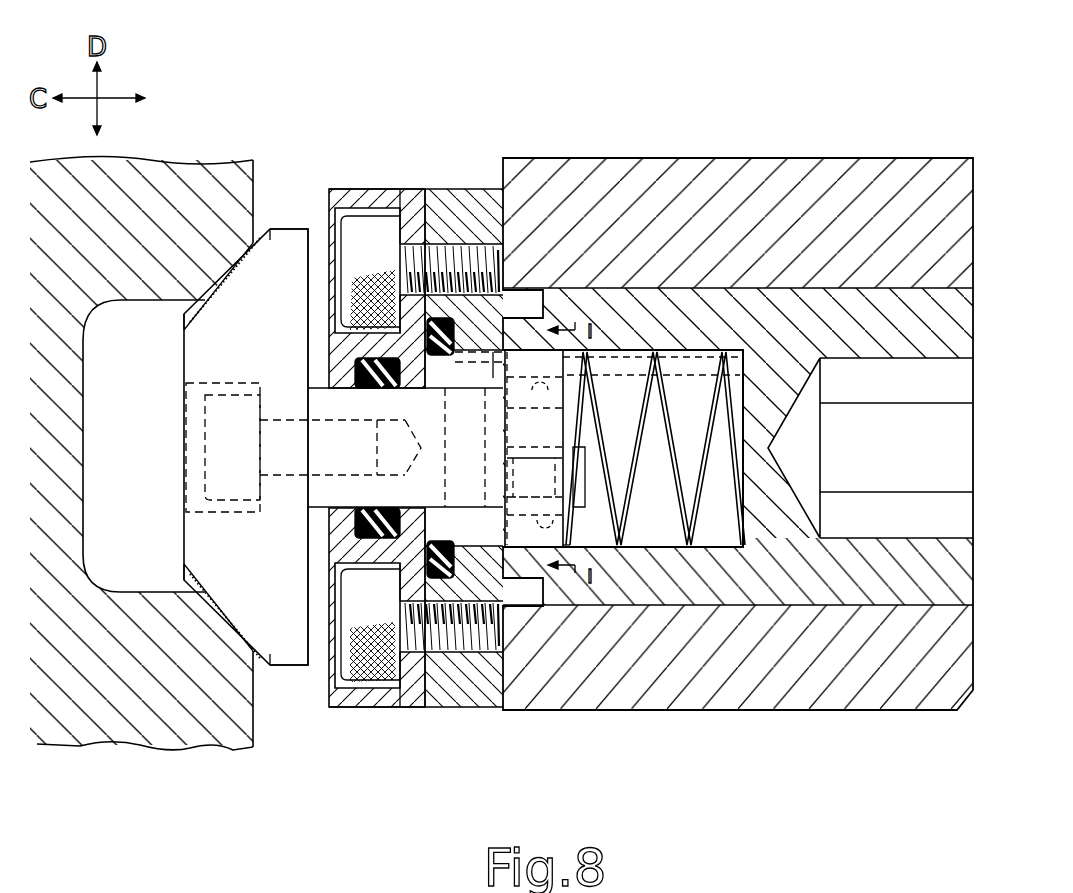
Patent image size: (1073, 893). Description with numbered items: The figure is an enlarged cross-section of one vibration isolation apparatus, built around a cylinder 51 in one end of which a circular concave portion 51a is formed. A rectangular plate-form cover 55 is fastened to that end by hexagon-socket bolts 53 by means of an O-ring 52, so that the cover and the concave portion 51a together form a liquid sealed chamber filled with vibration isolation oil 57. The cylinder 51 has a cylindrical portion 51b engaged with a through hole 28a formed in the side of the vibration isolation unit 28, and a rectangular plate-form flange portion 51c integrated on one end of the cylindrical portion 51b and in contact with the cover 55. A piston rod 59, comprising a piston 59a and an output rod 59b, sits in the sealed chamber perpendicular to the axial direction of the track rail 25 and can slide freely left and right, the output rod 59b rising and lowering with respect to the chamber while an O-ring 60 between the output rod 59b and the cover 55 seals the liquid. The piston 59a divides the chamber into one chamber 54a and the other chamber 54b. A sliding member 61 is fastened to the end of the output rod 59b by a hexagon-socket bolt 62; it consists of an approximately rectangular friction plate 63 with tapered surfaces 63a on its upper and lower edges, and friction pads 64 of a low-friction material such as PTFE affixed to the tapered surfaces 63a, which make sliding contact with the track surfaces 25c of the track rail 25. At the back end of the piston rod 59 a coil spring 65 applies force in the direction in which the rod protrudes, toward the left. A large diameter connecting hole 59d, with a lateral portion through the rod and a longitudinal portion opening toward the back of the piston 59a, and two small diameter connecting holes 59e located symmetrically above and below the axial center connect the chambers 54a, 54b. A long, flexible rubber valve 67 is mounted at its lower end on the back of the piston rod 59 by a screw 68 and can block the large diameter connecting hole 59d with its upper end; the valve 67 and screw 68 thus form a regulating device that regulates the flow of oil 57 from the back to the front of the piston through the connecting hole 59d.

The track rail 25 is at (102, 748).
The track surfaces 25c is at (218, 300).
The vibration isolation unit 28 is at (933, 710).
The through hole 28a is at (958, 592).
The cylinder 51 is at (548, 205).
The concave portion 51a is at (745, 350).
The cylindrical portion 51b is at (948, 325).
The flange portion 51c is at (484, 188).
The O-ring 52 is at (443, 600).
The bolts 53 is at (358, 238).
The one chamber 54a is at (453, 544).
The other chamber 54b is at (712, 409).
The cover 55 is at (417, 189).
The oil 57 is at (728, 350).
The piston rod 59 is at (598, 350).
The piston 59a is at (626, 350).
The output rod 59b is at (490, 380).
The large diameter connecting hole 59d is at (557, 560).
The small diameter connecting hole 59e is at (605, 268).
The O-ring 60 is at (372, 540).
The sliding member 61 is at (298, 228).
The bolt 62 is at (228, 452).
The friction plate 63 is at (220, 360).
The tapered surfaces 63a is at (243, 246).
The friction pads 64 is at (272, 228).
The coil spring 65 is at (705, 505).
The valve 67 is at (648, 545).
The screw 68 is at (585, 500).